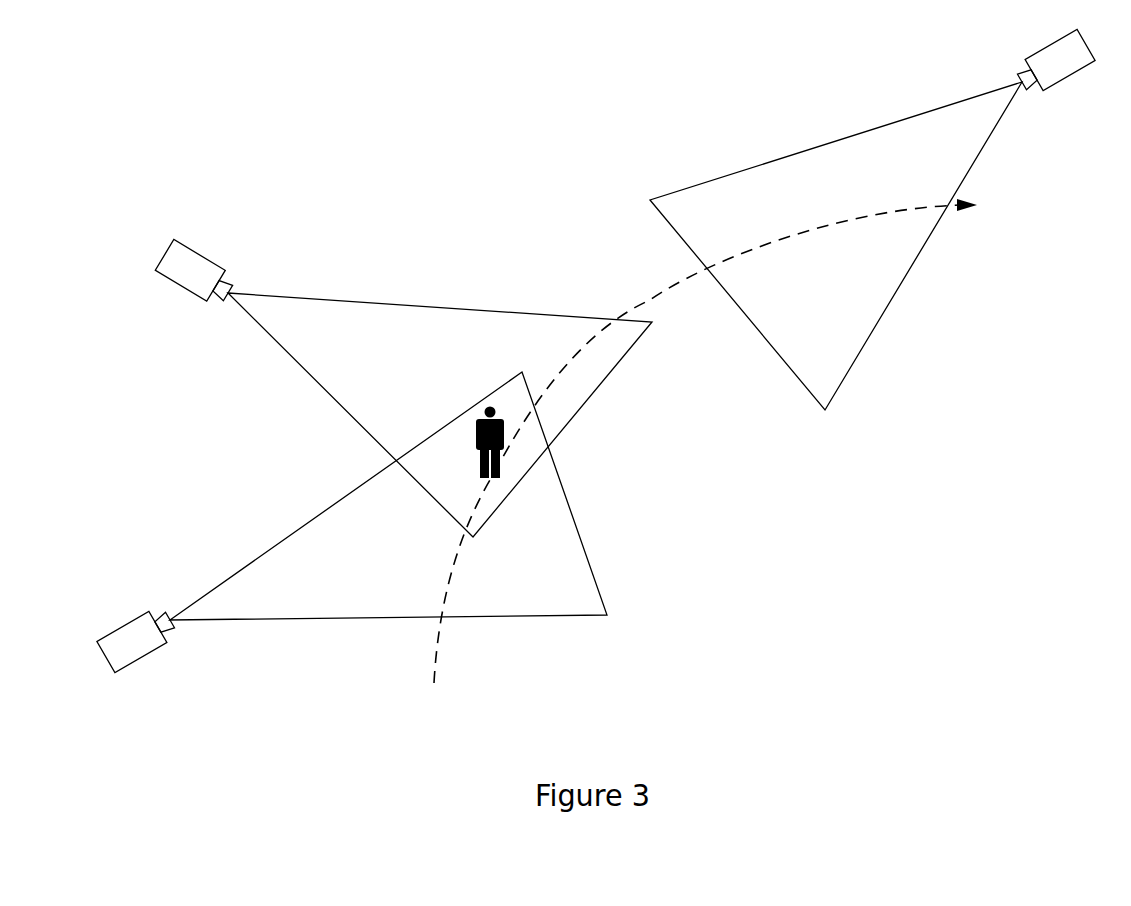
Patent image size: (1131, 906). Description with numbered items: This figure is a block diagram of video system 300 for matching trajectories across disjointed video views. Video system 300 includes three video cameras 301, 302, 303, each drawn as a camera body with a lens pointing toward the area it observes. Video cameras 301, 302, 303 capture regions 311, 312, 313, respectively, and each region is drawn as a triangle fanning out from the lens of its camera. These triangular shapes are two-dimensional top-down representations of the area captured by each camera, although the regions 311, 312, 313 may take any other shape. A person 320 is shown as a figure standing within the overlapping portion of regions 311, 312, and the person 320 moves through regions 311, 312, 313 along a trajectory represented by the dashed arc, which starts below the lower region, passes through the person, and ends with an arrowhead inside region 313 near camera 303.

The video system 300 is at (222, 104).
The video camera 301 is at (146, 657).
The video camera 302 is at (197, 252).
The video camera 303 is at (1056, 44).
The region 311 is at (305, 522).
The region 312 is at (478, 308).
The region 313 is at (880, 126).
The person 320 is at (489, 404).